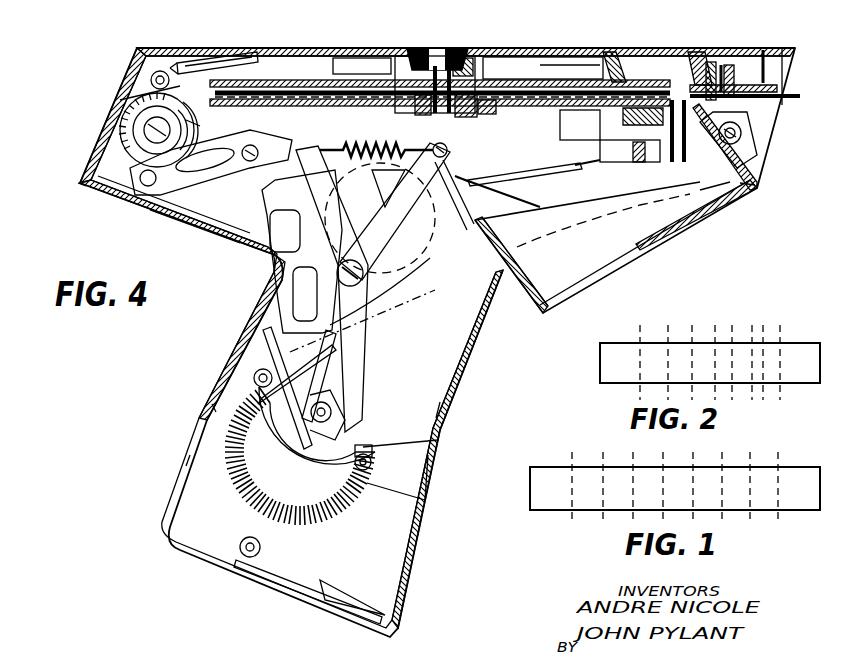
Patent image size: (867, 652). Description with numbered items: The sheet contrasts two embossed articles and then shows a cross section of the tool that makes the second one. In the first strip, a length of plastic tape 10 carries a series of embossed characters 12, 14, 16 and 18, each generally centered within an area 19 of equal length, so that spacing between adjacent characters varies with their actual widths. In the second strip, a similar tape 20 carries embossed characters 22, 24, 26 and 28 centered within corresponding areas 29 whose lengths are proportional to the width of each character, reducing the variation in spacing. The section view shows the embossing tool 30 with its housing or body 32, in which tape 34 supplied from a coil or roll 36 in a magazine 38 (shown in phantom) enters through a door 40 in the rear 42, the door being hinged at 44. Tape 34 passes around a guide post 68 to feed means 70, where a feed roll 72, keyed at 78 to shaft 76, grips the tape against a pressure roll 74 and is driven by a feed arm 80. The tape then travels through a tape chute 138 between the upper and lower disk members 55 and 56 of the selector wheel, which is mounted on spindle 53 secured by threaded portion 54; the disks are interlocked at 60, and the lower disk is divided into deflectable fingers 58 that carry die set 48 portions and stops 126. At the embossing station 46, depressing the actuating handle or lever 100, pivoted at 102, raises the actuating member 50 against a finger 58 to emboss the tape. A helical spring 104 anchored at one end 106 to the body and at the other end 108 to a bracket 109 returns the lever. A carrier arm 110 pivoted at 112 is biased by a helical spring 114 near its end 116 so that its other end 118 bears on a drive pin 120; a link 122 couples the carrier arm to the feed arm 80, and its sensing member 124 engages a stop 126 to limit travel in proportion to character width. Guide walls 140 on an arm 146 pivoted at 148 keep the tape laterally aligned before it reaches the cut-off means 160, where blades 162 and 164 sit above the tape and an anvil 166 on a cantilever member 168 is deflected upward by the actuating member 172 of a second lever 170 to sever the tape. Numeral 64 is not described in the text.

In FIG. 1, the plastic tape 10 is at (560, 519).
In FIG. 1, the embossed character 12 is at (550, 480).
In FIG. 1, the embossed character 14 is at (615, 478).
In FIG. 1, the embossed character 16 is at (677, 478).
In FIG. 1, the embossed character 18 is at (736, 480).
In FIG. 1, the area 19 is at (585, 475).
In FIG. 2, the tape 20 is at (620, 392).
In FIG. 2, the embossed character 22 is at (622, 352).
In FIG. 2, the embossed character 24 is at (676, 352).
In FIG. 2, the embossed character 26 is at (720, 352).
In FIG. 2, the embossed character 28 is at (763, 352).
In FIG. 2, the area 29 is at (652, 340).
In FIG. 4, the embossing tool 30 is at (203, 413).
In FIG. 4, the housing or body 32 is at (190, 459).
In FIG. 4, the tape 34 is at (795, 99).
In FIG. 4, the coil or roll 36 is at (432, 262).
In FIG. 4, the magazine 38 is at (416, 296).
In FIG. 4, the door 40 is at (158, 222).
In FIG. 4, the rear 42 is at (78, 184).
In FIG. 4, the hinge 44 is at (185, 62).
In FIG. 4, the embossing station 46 is at (655, 100).
In FIG. 4, the embossing die set 48 is at (645, 95).
In FIG. 4, the actuating member 50 is at (625, 163).
In FIG. 4, the spindle 53 is at (448, 150).
In FIG. 4, the threaded portion 54 is at (475, 74).
In FIG. 4, the upper disk member 55 is at (556, 66).
In FIG. 4, the lower disk member 56 is at (548, 66).
In FIG. 4, the fingers 58 is at (582, 170).
In FIG. 4, the interlock 60 is at (472, 112).
In FIG. 4, the guide wedge 64 is at (618, 56).
In FIG. 4, the guide post 68 is at (107, 196).
In FIG. 4, the feed means 70 is at (145, 128).
In FIG. 4, the feed roll 72 is at (194, 128).
In FIG. 4, the pressure roll 74 is at (157, 74).
In FIG. 4, the shaft 76 is at (178, 112).
In FIG. 4, the key 78 is at (140, 100).
In FIG. 4, the feed arm 80 is at (144, 170).
In FIG. 4, the actuating handle or lever 100 is at (437, 405).
In FIG. 4, the pivot 102 is at (742, 137).
In FIG. 4, the helical spring 104 is at (250, 502).
In FIG. 4, the spring end 106 is at (252, 375).
In FIG. 4, the spring end 108 is at (370, 458).
In FIG. 4, the bracket 109 is at (380, 500).
In FIG. 4, the carrier arm 110 is at (355, 355).
In FIG. 4, the pivot 112 is at (364, 272).
In FIG. 4, the helical spring 114 is at (390, 184).
In FIG. 4, the carrier arm end 116 is at (295, 178).
In FIG. 4, the carrier arm end 118 is at (332, 413).
In FIG. 4, the drive pin 120 is at (308, 402).
In FIG. 4, the link 122 is at (196, 187).
In FIG. 4, the sensing member 124 is at (335, 112).
In FIG. 4, the stops 126 is at (362, 67).
In FIG. 4, the tape chute 138 is at (330, 80).
In FIG. 4, the guide walls 140 is at (694, 56).
In FIG. 4, the arm 146 is at (666, 189).
In FIG. 4, the pivot 148 is at (550, 158).
In FIG. 4, the cut-off means 160 is at (766, 60).
In FIG. 4, the blade 162 is at (712, 66).
In FIG. 4, the blade 164 is at (730, 66).
In FIG. 4, the anvil 166 is at (758, 181).
In FIG. 4, the cantilever member 168 is at (760, 128).
In FIG. 4, the second lever 170 is at (620, 248).
In FIG. 4, the actuating member 172 is at (722, 178).